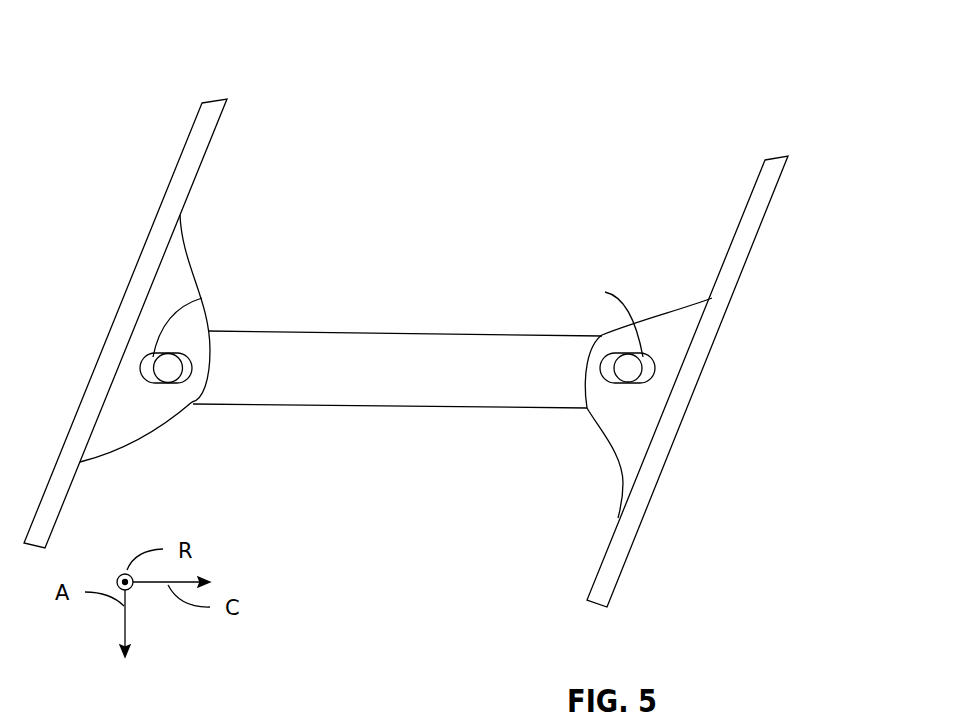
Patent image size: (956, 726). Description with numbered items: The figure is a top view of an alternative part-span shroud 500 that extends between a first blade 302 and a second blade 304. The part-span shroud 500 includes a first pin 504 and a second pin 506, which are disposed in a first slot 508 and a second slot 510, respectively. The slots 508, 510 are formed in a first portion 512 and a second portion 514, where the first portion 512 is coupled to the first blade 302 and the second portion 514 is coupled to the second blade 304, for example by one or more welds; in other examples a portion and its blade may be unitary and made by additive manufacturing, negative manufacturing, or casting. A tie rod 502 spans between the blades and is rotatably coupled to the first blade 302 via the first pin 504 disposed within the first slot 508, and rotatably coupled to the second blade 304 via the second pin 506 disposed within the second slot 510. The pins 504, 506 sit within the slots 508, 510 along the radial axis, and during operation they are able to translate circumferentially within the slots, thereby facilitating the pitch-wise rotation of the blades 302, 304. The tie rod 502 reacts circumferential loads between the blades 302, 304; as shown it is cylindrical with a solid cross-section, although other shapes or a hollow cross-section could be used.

The first blade 302 is at (212, 100).
The second blade 304 is at (773, 153).
The alternative part-span shroud 500 is at (598, 152).
The tie rod 502 is at (400, 332).
The first pin 504 is at (180, 382).
The second pin 506 is at (615, 383).
The first slot 508 is at (202, 298).
The second slot 510 is at (605, 292).
The first portion 512 is at (118, 450).
The second portion 514 is at (618, 477).